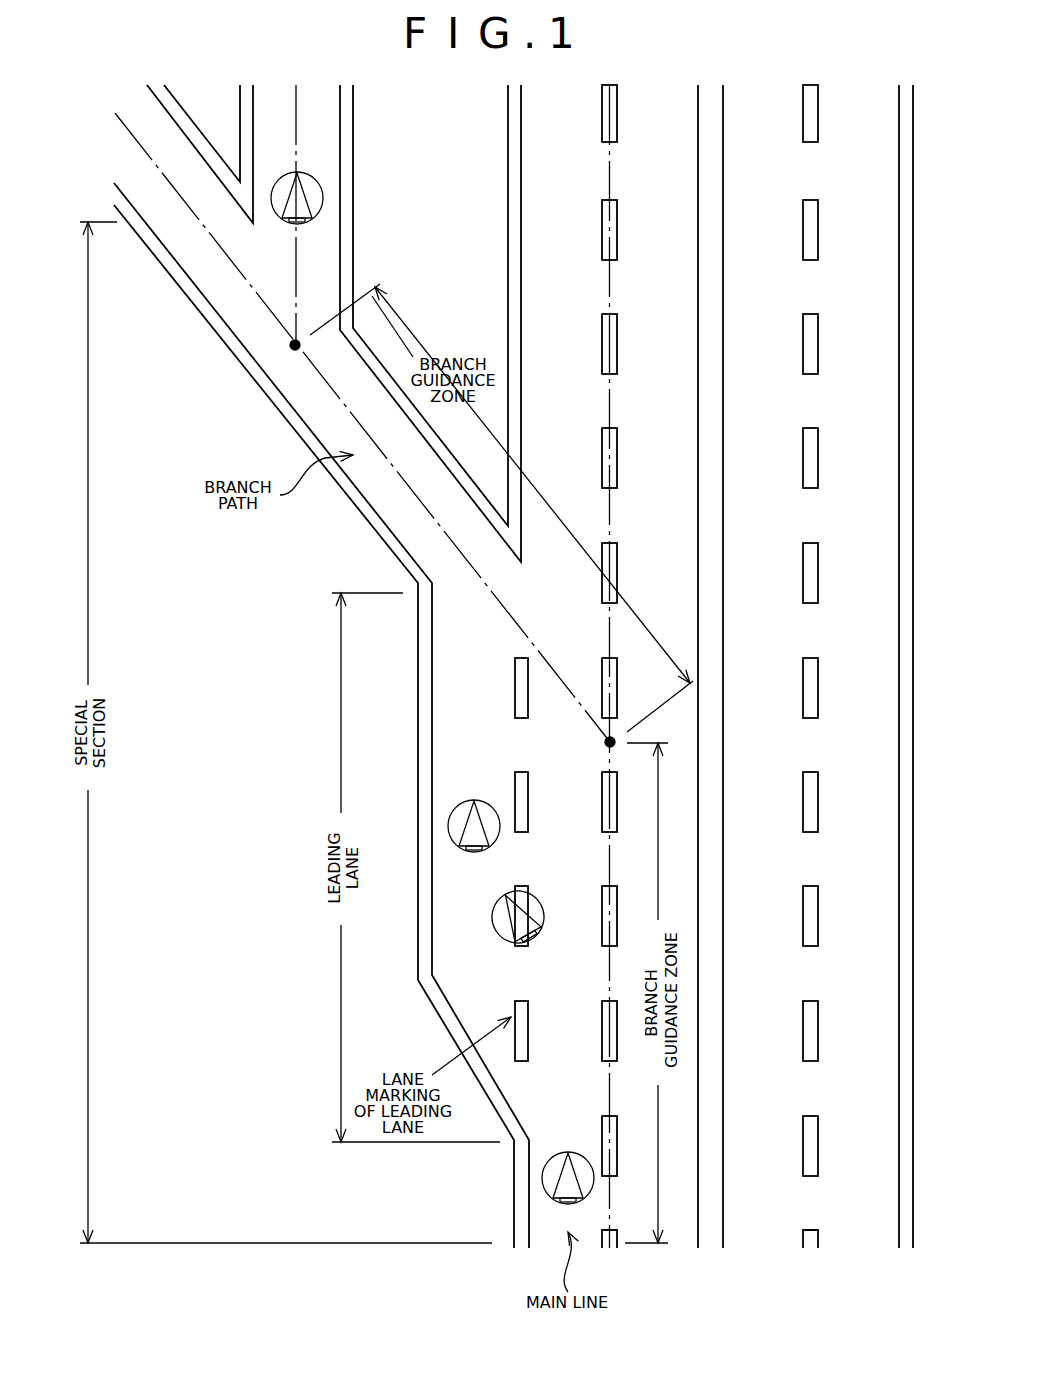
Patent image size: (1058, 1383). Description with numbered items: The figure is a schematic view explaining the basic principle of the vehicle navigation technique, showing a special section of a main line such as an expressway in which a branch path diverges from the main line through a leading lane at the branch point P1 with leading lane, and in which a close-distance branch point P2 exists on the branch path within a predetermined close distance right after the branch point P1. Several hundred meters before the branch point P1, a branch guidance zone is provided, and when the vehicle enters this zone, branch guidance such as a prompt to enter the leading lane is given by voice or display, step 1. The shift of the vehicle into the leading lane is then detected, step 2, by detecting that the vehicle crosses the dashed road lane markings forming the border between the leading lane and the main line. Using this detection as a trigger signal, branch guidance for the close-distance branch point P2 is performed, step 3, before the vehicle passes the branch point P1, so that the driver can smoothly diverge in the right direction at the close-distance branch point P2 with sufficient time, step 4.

The branch guidance step 1 is at (570, 1152).
The leading lane shift detection step 2 is at (540, 925).
The close-distance branch guidance step 3 is at (476, 800).
The diverging step 4 is at (318, 185).
The branch point with leading lane P1 is at (607, 745).
The close-distance branch point P2 is at (293, 348).